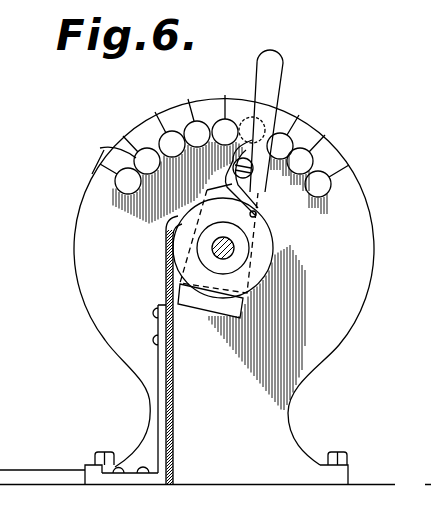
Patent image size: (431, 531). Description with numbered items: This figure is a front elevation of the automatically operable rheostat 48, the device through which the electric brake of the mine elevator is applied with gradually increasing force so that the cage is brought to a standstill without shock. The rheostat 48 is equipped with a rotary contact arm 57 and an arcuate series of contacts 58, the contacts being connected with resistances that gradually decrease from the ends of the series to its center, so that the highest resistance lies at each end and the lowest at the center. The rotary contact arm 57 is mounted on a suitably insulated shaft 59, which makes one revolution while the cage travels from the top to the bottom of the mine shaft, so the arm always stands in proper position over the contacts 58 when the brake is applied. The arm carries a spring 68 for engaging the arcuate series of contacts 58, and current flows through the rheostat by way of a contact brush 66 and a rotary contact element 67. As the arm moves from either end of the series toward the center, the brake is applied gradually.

The rheostat 48 is at (79, 238).
The arcuate series of contacts 58 is at (128, 181).
The spring 68 is at (266, 73).
The rotary contact arm 57 is at (250, 184).
The contact brush 66 is at (166, 237).
The shaft 59 is at (234, 247).
The rotary contact element 67 is at (260, 270).